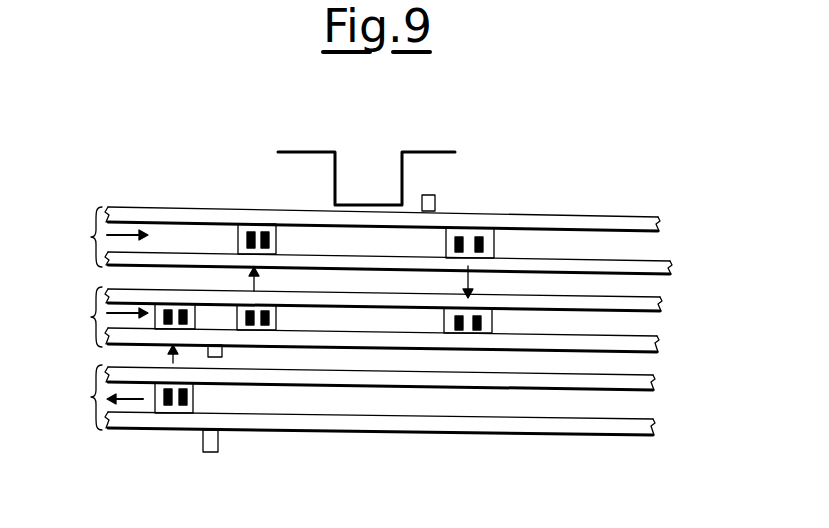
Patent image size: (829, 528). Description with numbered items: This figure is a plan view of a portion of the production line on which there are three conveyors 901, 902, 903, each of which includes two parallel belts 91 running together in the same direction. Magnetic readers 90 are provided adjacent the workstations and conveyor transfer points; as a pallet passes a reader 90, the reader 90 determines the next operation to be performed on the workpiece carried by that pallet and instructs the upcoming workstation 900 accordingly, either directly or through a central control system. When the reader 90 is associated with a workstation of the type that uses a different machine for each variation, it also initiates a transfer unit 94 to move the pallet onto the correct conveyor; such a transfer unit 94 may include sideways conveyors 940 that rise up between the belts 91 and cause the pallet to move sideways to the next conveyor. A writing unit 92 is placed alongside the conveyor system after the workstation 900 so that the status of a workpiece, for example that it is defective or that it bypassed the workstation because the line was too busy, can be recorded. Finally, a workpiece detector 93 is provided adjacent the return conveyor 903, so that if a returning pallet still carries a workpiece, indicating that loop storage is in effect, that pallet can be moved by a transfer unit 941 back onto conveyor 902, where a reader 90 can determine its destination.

The magnetic reader 90 is at (222, 351).
The belt 91 is at (655, 217).
The writing unit 92 is at (435, 193).
The workpiece detector 93 is at (209, 452).
The transfer unit 94 is at (278, 243).
The sideways conveyor 940 is at (480, 230).
The transfer unit 941 is at (156, 410).
The workstation 900 is at (366, 178).
The conveyor 901 is at (94, 237).
The conveyor 902 is at (94, 317).
The return conveyor 903 is at (91, 397).